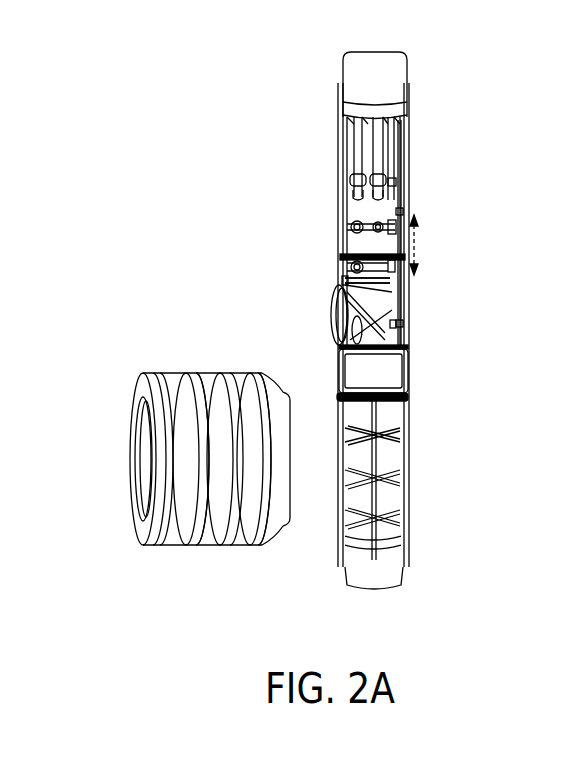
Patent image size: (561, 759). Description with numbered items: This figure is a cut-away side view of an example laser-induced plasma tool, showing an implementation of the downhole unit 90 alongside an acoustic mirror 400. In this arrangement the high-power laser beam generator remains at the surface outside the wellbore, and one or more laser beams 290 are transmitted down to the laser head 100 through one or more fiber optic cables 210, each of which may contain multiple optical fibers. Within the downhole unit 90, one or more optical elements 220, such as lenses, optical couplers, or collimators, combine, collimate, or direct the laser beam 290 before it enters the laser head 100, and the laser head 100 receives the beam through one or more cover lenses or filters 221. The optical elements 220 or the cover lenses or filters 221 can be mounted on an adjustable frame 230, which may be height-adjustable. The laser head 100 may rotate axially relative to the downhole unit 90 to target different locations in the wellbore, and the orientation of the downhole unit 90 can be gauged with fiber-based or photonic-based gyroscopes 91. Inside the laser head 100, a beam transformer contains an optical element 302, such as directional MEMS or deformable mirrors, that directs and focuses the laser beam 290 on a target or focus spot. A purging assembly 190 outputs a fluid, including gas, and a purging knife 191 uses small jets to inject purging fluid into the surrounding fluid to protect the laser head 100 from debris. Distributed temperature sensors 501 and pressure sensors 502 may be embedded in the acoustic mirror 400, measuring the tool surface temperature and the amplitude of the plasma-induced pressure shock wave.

The downhole unit 90 is at (425, 95).
The laser head 100 is at (408, 312).
The gyroscopes 91 is at (406, 535).
The fiber optic cables 210 is at (358, 152).
The laser beam 290 is at (364, 183).
The optical elements 220 is at (352, 222).
The cover lenses or filters 221 is at (348, 257).
The purging assembly 190 is at (345, 283).
The purging knife 191 is at (367, 280).
The optical element 302 is at (335, 336).
The adjustable frame 230 is at (405, 208).
The acoustic mirror 400 is at (125, 520).
The pressure sensors 502 is at (205, 375).
The distributed temperature sensors 501 is at (248, 540).